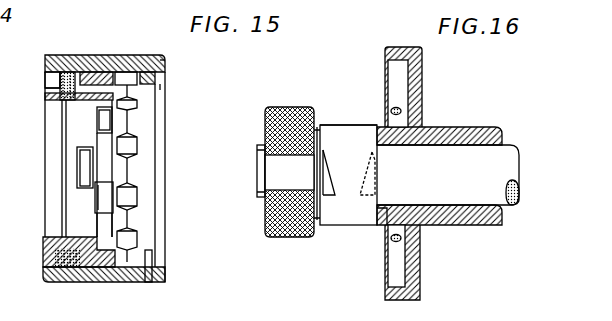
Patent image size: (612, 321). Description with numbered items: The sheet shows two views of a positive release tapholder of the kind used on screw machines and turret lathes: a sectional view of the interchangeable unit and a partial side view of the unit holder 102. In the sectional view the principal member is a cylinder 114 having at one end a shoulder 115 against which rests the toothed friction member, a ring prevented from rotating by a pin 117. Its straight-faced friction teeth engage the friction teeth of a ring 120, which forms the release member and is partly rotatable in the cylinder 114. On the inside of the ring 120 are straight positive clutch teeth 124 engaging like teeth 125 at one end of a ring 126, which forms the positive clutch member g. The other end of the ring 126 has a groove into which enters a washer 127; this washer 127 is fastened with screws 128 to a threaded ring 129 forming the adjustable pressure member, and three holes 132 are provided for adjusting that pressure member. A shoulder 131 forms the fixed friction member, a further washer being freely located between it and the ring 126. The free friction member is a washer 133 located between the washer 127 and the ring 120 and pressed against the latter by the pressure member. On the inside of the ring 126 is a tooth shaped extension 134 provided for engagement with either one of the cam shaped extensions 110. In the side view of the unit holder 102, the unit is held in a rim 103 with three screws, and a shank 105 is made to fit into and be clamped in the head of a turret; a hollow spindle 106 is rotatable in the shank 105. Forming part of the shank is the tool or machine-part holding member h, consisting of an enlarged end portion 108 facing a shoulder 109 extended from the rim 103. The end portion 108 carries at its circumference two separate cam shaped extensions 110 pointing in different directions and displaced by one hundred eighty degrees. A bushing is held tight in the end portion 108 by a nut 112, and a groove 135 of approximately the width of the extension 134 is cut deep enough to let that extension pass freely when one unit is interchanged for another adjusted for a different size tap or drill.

In FIG. 15, the ring 120 is at (115, 57).
In FIG. 15, the threaded ring 129 is at (45, 263).
In FIG. 15, the cylinder 114 is at (163, 60).
In FIG. 15, the shoulder 115 is at (163, 77).
In FIG. 15, the holes 132 is at (48, 80).
In FIG. 15, the washer 127 is at (67, 72).
In FIG. 15, the washer 133 is at (82, 72).
In FIG. 15, the ring 126 is at (73, 118).
In FIG. 15, the positive clutch member g is at (85, 142).
In FIG. 15, the tooth shaped extension 134 is at (87, 175).
In FIG. 15, the positive clutch teeth 124 is at (102, 198).
In FIG. 15, the teeth 125 is at (102, 228).
In FIG. 15, the pin 117 is at (147, 283).
In FIG. 15, the shoulder 131 is at (44, 245).
In FIG. 15, the screws 128 is at (65, 267).
In FIG. 16, the nut 112 is at (272, 233).
In FIG. 16, the groove 135 is at (272, 172).
In FIG. 16, the enlarged end portion 108 is at (362, 132).
In FIG. 16, the tool or machine-part holding member h is at (330, 127).
In FIG. 16, the cam shaped extensions 110 is at (364, 195).
In FIG. 16, the shank 105 is at (470, 128).
In FIG. 16, the rim 103 is at (420, 72).
In FIG. 16, the hollow spindle 106 is at (504, 207).
In FIG. 16, the unit holder 102 is at (417, 238).
In FIG. 16, the shoulder 109 is at (383, 233).